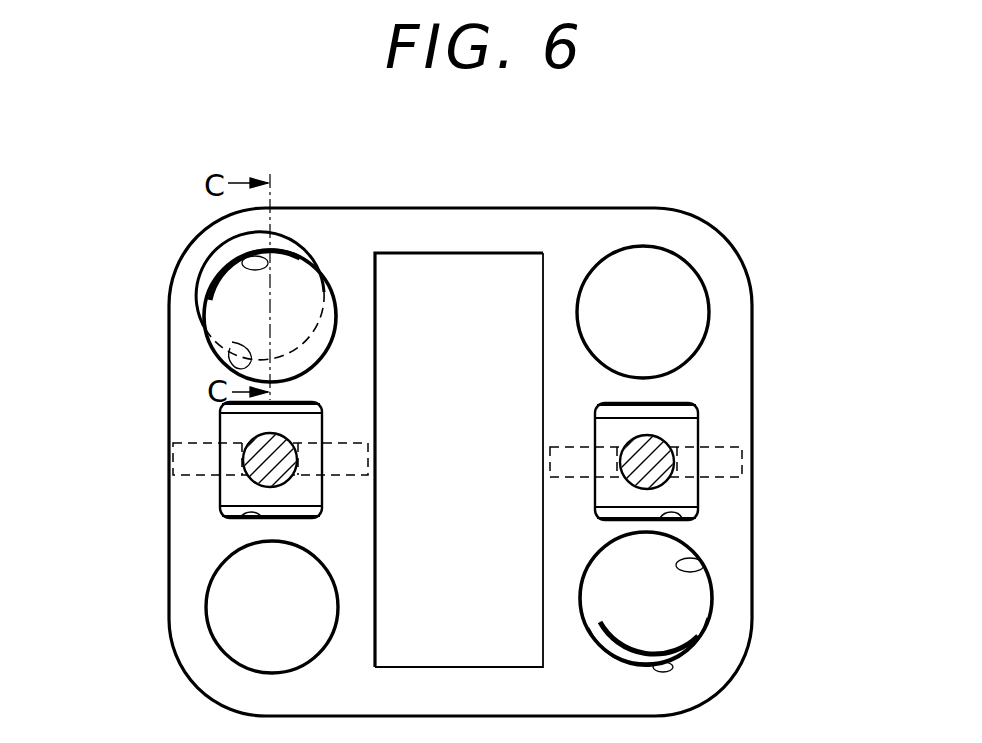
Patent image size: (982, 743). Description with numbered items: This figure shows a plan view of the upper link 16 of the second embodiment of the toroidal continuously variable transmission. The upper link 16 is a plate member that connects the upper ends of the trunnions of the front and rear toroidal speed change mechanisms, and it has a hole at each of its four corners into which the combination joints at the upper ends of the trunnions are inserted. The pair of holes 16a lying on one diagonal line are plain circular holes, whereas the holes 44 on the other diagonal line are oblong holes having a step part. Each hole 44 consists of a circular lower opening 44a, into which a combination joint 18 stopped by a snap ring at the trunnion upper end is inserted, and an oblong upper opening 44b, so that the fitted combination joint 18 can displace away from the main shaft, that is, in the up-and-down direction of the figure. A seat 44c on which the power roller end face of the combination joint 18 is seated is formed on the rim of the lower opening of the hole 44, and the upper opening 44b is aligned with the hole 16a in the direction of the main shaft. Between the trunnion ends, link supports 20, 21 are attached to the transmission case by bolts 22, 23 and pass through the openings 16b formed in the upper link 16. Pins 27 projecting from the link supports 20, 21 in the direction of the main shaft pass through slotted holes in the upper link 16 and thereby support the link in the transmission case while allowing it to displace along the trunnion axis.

The upper link 16 is at (640, 208).
The openings 16a is at (700, 280).
The openings for the link supports 16b is at (240, 520).
The combination joint 18 is at (228, 358).
The link support 20 is at (222, 410).
The link support 21 is at (697, 407).
The bolt 22 is at (288, 434).
The bolt 23 is at (622, 440).
The pins 27 is at (177, 474).
The holes 44 is at (80, 233).
The lower openings 44a is at (232, 342).
The upper openings 44b is at (242, 264).
The seat 44c is at (222, 292).